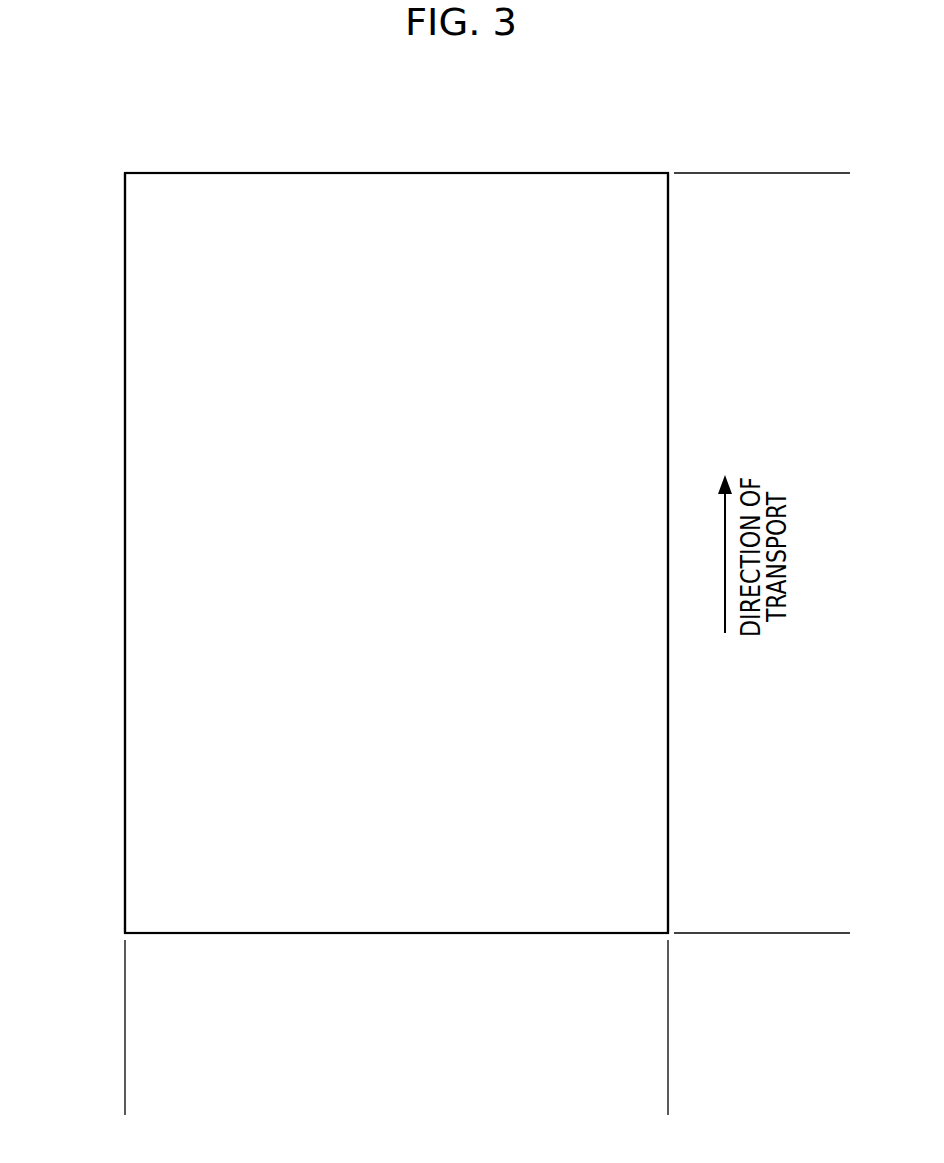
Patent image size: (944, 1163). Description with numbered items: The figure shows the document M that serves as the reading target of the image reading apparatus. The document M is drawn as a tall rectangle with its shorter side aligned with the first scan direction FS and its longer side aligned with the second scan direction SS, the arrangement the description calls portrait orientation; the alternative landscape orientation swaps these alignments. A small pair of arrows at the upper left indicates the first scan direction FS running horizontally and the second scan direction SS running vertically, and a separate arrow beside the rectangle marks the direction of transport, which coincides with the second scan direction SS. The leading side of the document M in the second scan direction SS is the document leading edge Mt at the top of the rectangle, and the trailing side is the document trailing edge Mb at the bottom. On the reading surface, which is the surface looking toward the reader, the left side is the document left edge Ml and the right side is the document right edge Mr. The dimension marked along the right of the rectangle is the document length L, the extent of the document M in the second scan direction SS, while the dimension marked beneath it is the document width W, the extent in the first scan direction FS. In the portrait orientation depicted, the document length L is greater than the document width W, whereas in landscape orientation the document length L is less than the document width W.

The document M is at (706, 135).
The document leading edge Mt is at (404, 173).
The document trailing edge Mb is at (430, 933).
The document left edge Ml is at (125, 360).
The document right edge Mr is at (668, 340).
The document length L is at (838, 186).
The document width W is at (139, 1103).
The first scan direction FS is at (130, 150).
The second scan direction SS is at (68, 208).